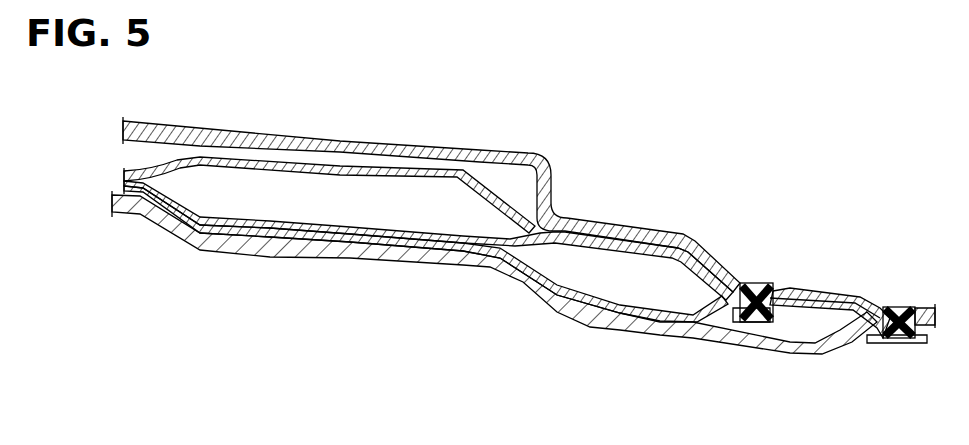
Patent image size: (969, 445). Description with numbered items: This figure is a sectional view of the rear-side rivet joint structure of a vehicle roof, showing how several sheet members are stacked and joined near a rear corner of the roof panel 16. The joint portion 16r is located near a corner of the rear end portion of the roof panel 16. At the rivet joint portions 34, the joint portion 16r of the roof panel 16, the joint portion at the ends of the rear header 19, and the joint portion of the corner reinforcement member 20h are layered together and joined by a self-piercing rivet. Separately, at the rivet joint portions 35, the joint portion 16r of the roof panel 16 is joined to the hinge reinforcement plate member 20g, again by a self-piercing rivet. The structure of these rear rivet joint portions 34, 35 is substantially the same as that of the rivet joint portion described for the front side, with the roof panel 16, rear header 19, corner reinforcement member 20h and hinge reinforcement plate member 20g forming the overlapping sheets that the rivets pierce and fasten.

The roof panel 16 is at (358, 137).
The rear header 19 is at (488, 192).
The hinge reinforcement plate member 20g is at (590, 243).
The corner reinforcement member 20h is at (716, 337).
The joint portion 16r is at (829, 291).
The rivet joint portion 34 is at (898, 307).
The rivet joint portion 35 is at (760, 283).